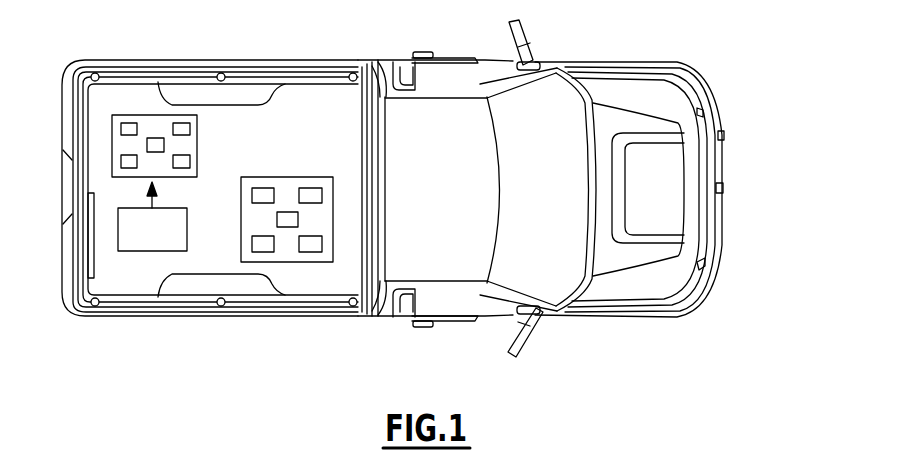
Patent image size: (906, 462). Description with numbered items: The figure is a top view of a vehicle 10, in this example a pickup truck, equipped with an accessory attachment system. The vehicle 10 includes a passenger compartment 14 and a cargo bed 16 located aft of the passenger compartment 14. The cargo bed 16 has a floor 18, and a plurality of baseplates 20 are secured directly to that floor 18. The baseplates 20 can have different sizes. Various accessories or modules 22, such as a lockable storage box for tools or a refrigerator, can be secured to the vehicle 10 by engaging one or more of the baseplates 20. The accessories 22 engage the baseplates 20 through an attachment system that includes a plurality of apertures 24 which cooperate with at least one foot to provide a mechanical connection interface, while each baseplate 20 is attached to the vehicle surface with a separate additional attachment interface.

The vehicle 10 is at (797, 68).
The passenger compartment 14 is at (445, 297).
The cargo bed 16 is at (206, 254).
The floor 18 is at (303, 103).
The baseplate 20 is at (112, 128).
The accessory/module 22 is at (117, 235).
The aperture 24 is at (133, 122).